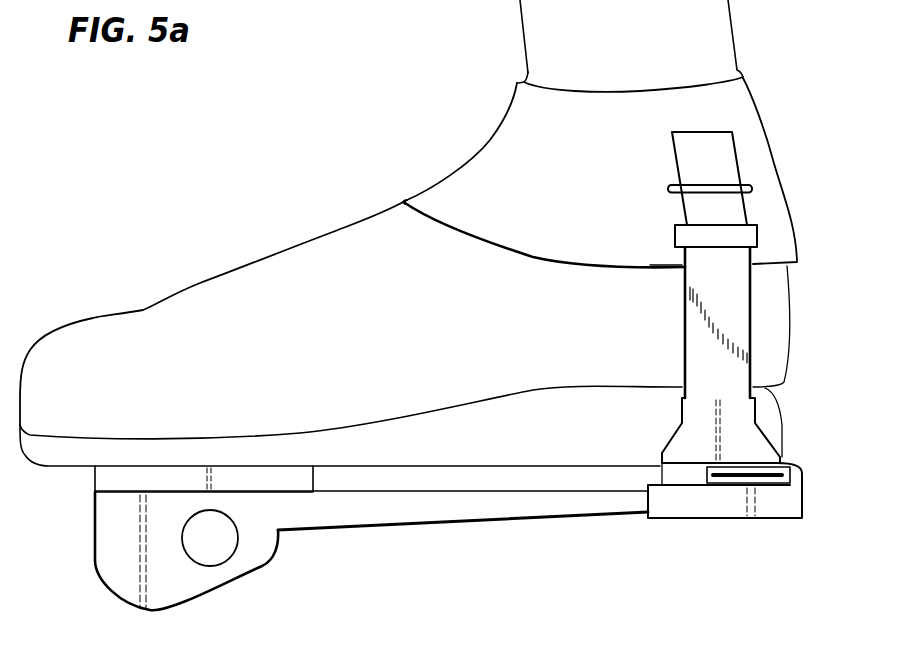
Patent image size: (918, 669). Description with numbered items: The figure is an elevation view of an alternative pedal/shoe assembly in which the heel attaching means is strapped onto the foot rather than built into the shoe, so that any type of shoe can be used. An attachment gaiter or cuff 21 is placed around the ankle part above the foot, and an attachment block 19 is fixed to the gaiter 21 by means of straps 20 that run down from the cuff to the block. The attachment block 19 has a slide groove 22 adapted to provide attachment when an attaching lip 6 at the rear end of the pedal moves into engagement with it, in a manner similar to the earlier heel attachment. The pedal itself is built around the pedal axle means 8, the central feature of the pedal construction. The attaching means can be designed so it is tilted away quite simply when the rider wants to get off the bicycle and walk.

The attachment gaiter or cuff 21 is at (717, 107).
The straps 20 is at (720, 237).
The attachment block 19 is at (748, 435).
The slide groove 22 is at (780, 462).
The attaching lip 6 is at (803, 477).
The pedal axle means 8 is at (218, 567).